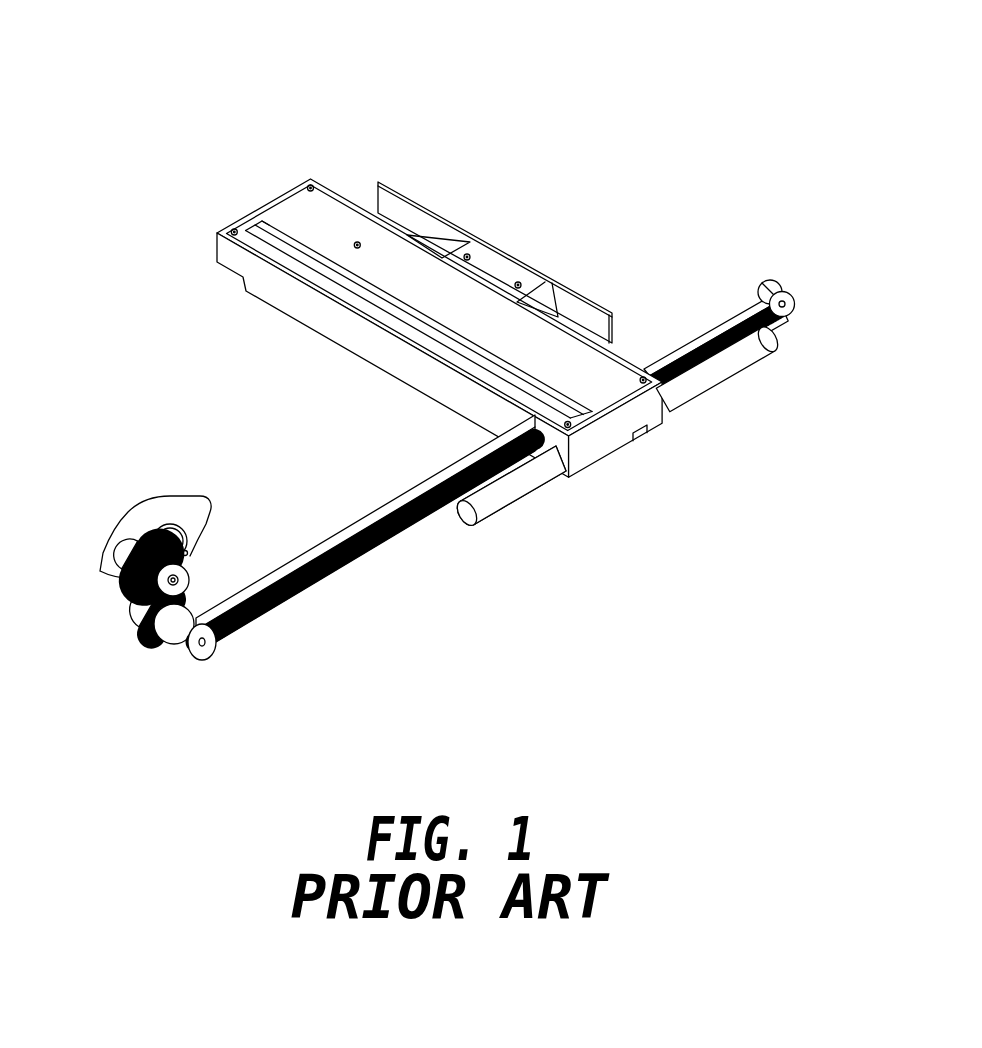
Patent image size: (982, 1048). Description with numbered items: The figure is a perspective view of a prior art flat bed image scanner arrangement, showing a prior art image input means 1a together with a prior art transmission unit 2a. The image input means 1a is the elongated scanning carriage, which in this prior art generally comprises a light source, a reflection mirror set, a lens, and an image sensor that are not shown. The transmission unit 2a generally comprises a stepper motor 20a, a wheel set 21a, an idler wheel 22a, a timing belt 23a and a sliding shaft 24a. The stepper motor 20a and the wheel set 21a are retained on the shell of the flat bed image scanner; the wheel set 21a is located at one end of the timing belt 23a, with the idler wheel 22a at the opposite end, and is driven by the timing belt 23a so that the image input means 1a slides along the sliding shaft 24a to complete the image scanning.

The image input means 1a is at (342, 122).
The transmission unit 2a is at (878, 377).
The stepper motor 20a is at (187, 513).
The wheel set 21a is at (148, 643).
The idler wheel 22a is at (792, 311).
The timing belt 23a is at (292, 596).
The sliding shaft 24a is at (500, 498).